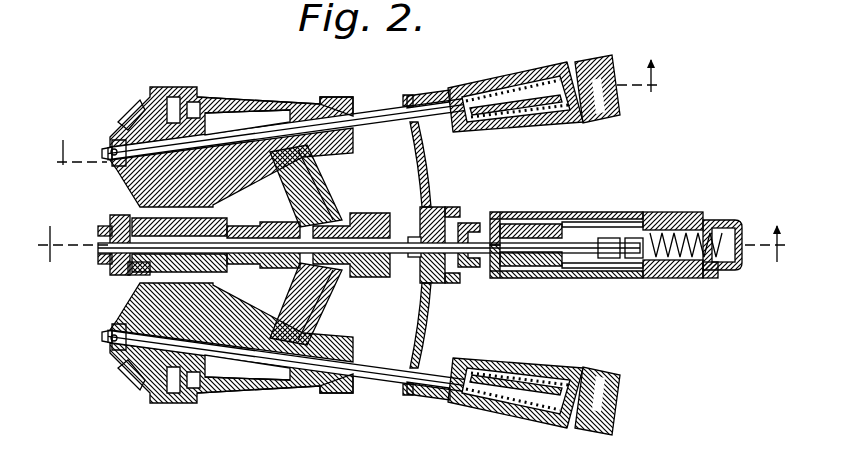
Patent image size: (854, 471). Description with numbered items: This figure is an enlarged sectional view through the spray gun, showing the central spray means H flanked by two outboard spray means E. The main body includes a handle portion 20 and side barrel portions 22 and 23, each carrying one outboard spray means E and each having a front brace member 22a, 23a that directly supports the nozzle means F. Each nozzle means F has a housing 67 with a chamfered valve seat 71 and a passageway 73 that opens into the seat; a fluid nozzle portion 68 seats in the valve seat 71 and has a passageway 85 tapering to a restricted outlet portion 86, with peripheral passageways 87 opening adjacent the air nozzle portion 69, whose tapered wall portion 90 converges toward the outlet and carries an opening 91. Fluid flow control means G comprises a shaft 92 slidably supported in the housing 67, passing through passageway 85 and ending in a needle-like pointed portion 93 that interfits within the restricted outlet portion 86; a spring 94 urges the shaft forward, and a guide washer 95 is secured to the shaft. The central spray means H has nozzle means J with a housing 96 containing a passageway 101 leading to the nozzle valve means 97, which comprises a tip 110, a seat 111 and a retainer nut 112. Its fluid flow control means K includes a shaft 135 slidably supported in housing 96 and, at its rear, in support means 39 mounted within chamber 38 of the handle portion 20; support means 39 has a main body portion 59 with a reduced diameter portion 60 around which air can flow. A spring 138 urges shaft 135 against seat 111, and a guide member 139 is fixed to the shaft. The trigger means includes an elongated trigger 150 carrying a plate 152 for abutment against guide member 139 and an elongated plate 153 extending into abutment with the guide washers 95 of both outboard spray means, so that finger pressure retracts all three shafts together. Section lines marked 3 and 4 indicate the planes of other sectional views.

The handle portion 20 is at (560, 212).
The side barrel portion 22 is at (540, 62).
The front brace member 22a is at (318, 197).
The side barrel portion 23 is at (505, 430).
The front brace member 23a is at (318, 300).
The chamber 38 is at (645, 212).
The support means 39 is at (715, 220).
The main body portion 59 is at (660, 278).
The reduced diameter portion 60 is at (550, 272).
The housing 67 is at (247, 104).
The fluid nozzle portion 68 is at (217, 112).
The air nozzle portion 69 is at (142, 97).
The chamfered valve seat 71 is at (240, 172).
The passageway 73 is at (282, 106).
The passageway 85 is at (200, 100).
The restricted outlet portion 86 is at (112, 162).
The passageways 87 is at (176, 88).
The tapered wall portion 90 is at (130, 135).
The opening 91 is at (110, 154).
The shaft 92 is at (392, 112).
The needle-like pointed portion 93 is at (118, 150).
The spring 94 is at (518, 70).
The guide washer 95 is at (425, 95).
The housing 96 is at (255, 222).
The nozzle valve means 97 is at (100, 213).
The passageway 101 is at (215, 262).
The tip 110 is at (98, 250).
The seat 111 is at (130, 215).
The retainer nut 112 is at (135, 272).
The shaft 135 is at (412, 230).
The spring 138 is at (698, 278).
The guide member 139 is at (478, 262).
The trigger 150 is at (440, 272).
The plate 152 is at (462, 217).
The elongated plate 153 is at (426, 160).
The section line 3- 3 is at (414, 229).
The section line 4- 4 is at (357, 98).
The outboard spray means E is at (298, 72).
The nozzle means F is at (113, 73).
The fluid flow control means G is at (386, 88).
The central spray means H is at (380, 198).
The nozzle means J is at (84, 284).
The fluid flow control means K is at (488, 205).